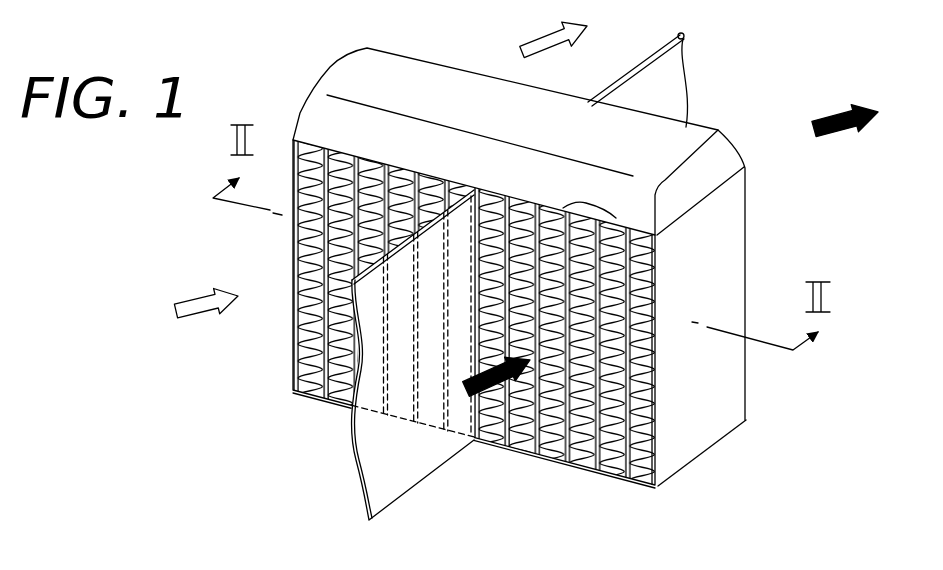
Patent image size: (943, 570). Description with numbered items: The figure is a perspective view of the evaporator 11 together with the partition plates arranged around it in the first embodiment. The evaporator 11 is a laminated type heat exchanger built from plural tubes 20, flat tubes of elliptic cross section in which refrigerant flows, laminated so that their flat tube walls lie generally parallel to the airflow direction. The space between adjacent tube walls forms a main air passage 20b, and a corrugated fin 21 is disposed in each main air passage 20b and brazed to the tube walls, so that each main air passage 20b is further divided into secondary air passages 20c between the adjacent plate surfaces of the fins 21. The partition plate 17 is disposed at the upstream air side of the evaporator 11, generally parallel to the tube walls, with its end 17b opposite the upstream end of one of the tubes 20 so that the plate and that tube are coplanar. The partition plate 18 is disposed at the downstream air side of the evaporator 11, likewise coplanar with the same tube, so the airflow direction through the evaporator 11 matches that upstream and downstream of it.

The evaporator 11 is at (296, 63).
The partition plate 17 is at (403, 473).
The end of partition plate 17b is at (472, 428).
The partition plate 18 is at (684, 33).
The tubes 20 is at (627, 473).
The main air passage 20b is at (583, 190).
The secondary air passages 20c is at (647, 437).
The corrugated fins 21 is at (582, 433).